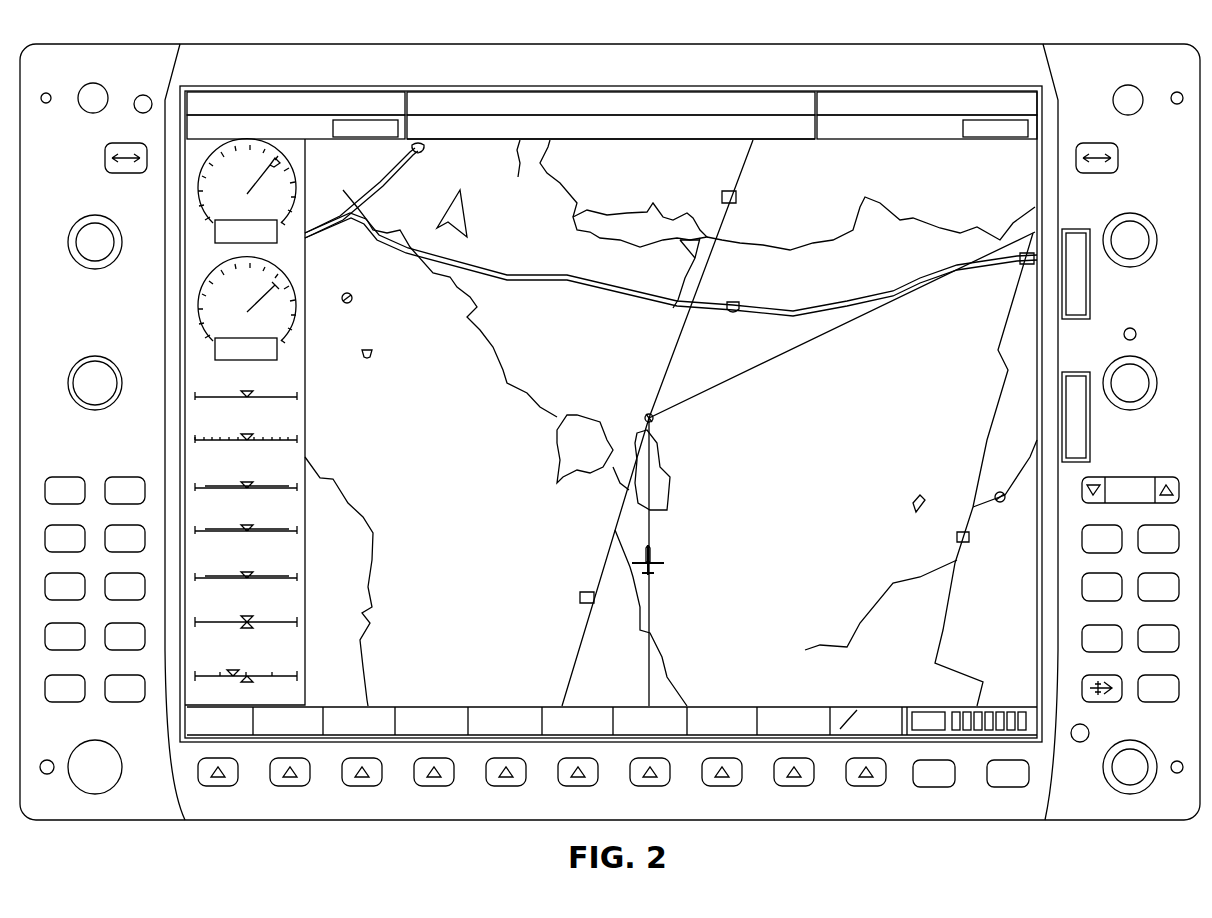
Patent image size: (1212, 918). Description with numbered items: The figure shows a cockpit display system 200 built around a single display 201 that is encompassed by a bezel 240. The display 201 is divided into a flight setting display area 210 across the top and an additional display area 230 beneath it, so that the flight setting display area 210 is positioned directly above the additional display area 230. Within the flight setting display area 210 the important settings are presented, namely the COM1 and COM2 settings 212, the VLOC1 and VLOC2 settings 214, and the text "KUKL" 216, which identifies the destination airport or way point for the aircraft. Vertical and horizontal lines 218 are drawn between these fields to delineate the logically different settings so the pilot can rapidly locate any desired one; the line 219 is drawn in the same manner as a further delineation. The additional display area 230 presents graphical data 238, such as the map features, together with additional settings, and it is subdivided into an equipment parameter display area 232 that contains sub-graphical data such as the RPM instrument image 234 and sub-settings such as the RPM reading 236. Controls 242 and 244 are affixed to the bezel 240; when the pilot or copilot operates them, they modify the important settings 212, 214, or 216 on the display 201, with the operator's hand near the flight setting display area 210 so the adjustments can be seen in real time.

The cockpit display system 200 is at (1000, 826).
The display 201 is at (888, 92).
The flight setting display area 210 is at (671, 423).
The COM1 and COM2 settings 212 is at (293, 105).
The VLOC1 and VLOC2 settings 214 is at (927, 130).
The text "KUKL" 216 is at (487, 103).
The vertical and/or horizontal lines 218 is at (410, 117).
The message bar 219 is at (462, 118).
The additional display area 230 is at (812, 470).
The equipment parameter display area 232 is at (309, 418).
The RPM instrument image 234 is at (197, 293).
The RPM reading 236 is at (279, 359).
The graphical data 238 is at (565, 476).
The bezel 240 is at (330, 825).
The control 242 is at (84, 250).
The control 244 is at (1140, 250).